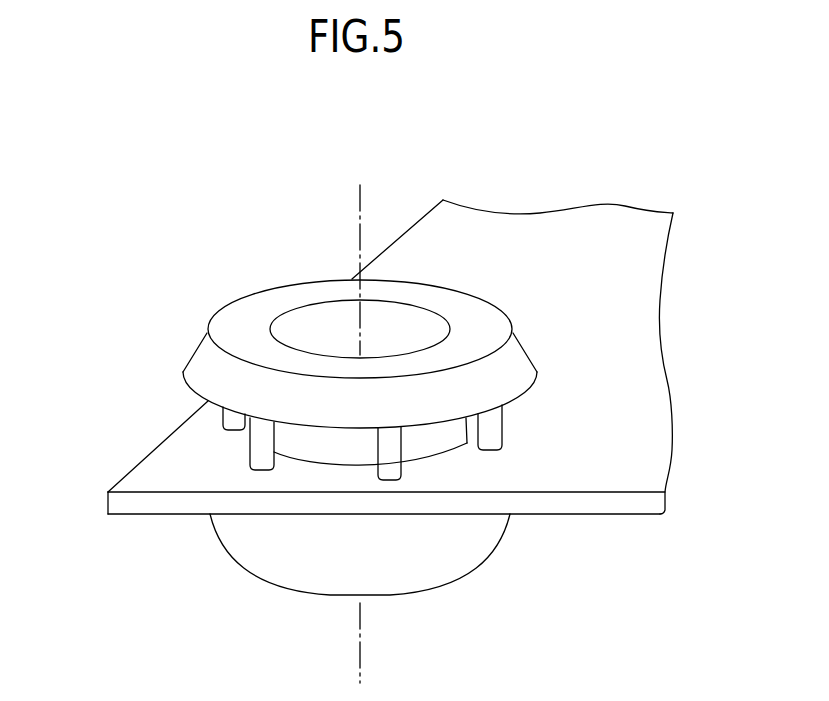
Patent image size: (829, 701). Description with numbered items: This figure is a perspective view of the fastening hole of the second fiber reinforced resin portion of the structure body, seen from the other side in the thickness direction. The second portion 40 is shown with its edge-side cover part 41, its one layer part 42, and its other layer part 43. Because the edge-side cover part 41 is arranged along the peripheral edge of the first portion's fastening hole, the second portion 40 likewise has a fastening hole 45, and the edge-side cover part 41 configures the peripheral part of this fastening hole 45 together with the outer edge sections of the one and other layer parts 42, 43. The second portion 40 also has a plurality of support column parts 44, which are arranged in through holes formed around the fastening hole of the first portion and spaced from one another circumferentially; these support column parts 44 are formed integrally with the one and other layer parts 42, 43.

The second portion 40 is at (411, 415).
The edge-side cover part 41 is at (442, 440).
The one layer part 42 is at (207, 450).
The other layer part 43 is at (202, 358).
The support column parts 44 is at (222, 418).
The fastening hole 45 is at (295, 347).